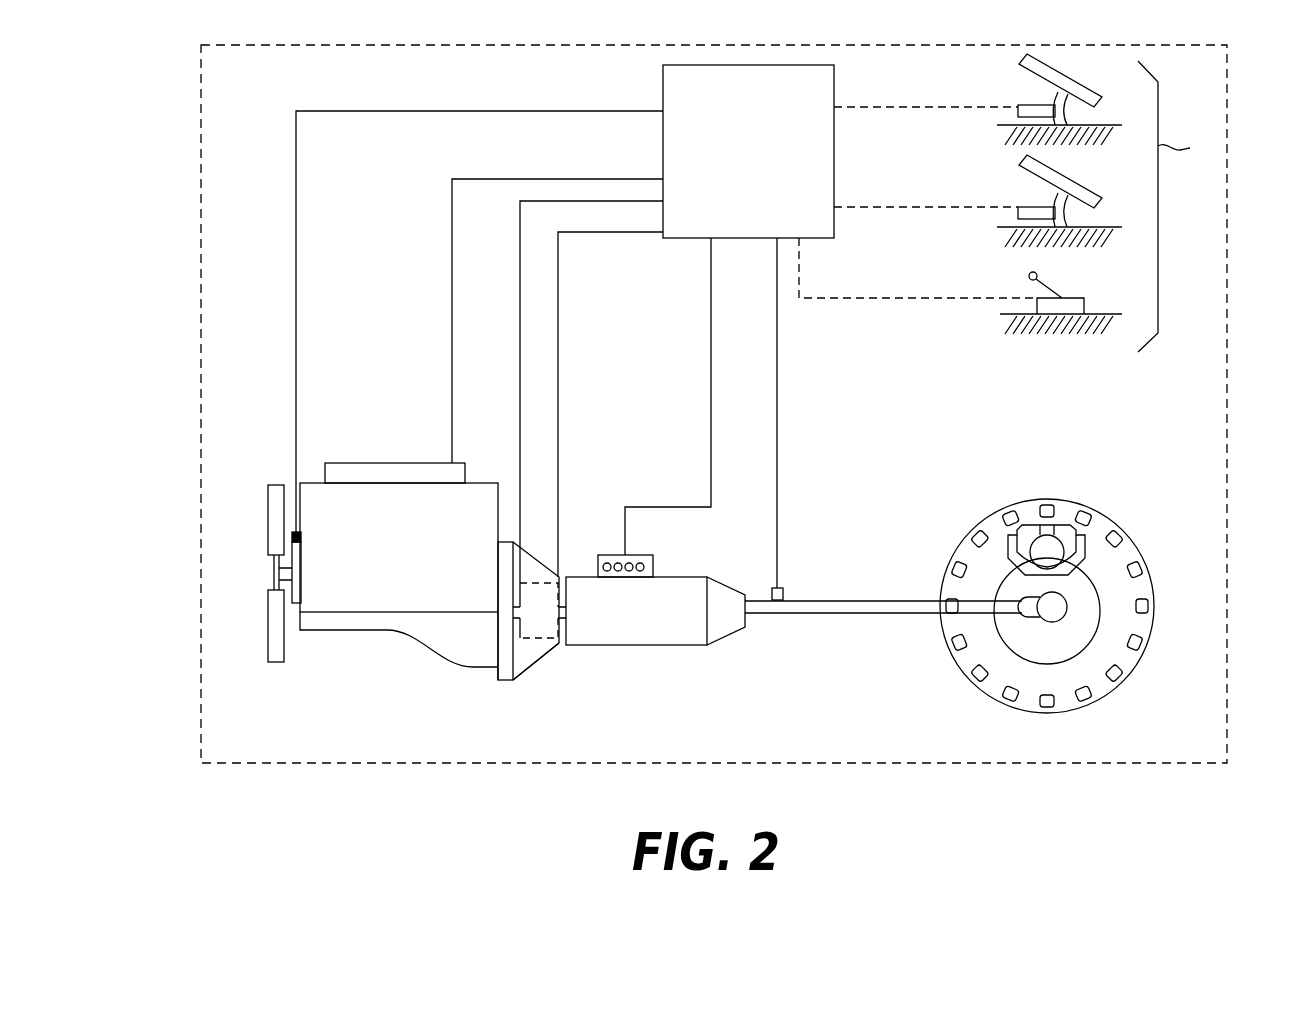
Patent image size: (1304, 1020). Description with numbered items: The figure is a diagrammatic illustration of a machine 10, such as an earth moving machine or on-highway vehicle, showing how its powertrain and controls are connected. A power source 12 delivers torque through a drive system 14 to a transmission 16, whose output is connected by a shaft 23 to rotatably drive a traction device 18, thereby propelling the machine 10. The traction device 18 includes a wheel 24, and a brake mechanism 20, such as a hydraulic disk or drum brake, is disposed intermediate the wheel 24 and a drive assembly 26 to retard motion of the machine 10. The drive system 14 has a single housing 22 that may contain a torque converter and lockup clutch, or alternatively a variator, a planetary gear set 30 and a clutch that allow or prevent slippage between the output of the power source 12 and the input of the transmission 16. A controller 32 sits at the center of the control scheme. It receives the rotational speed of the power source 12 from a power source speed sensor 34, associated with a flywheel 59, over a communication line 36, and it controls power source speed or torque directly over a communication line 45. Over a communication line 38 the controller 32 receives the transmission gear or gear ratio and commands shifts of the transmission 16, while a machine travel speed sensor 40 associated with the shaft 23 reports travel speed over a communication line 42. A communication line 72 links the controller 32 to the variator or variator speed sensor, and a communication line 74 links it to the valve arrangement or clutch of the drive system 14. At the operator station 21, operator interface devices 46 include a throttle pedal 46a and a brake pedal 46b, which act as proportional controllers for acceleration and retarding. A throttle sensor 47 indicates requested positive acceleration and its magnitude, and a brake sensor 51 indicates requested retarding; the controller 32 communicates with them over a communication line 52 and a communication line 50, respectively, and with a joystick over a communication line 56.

The machine 10 is at (1230, 662).
The power source 12 is at (407, 567).
The drive system 14 is at (524, 645).
The transmission 16 is at (649, 624).
The traction device 18 is at (1057, 484).
The brake mechanism 20 is at (1050, 547).
The operator station 21 is at (1183, 103).
The housing 22 is at (527, 670).
The shaft 23 is at (777, 615).
The wheel 24 is at (1100, 530).
The drive assembly 26 is at (1053, 610).
The planetary gear set 30 is at (387, 463).
The controller 32 is at (764, 166).
The power source speed sensor 34 is at (293, 540).
The communication line 36 is at (296, 280).
The communication line 38 is at (711, 333).
The machine travel speed sensor 40 is at (782, 588).
The communication line 42 is at (777, 360).
The communication line 45 is at (452, 347).
The operator interface devices 46 is at (1191, 146).
The throttle pedal 46a is at (1022, 62).
The brake pedal 46b is at (1022, 163).
The throttle sensor 47 is at (1018, 117).
The communication line 50 is at (895, 206).
The brake sensor 51 is at (1018, 219).
The communication line 52 is at (862, 108).
The communication line 56 is at (1029, 276).
The flywheel 59 is at (291, 606).
The communication line 72 is at (517, 240).
The communication line 74 is at (558, 378).